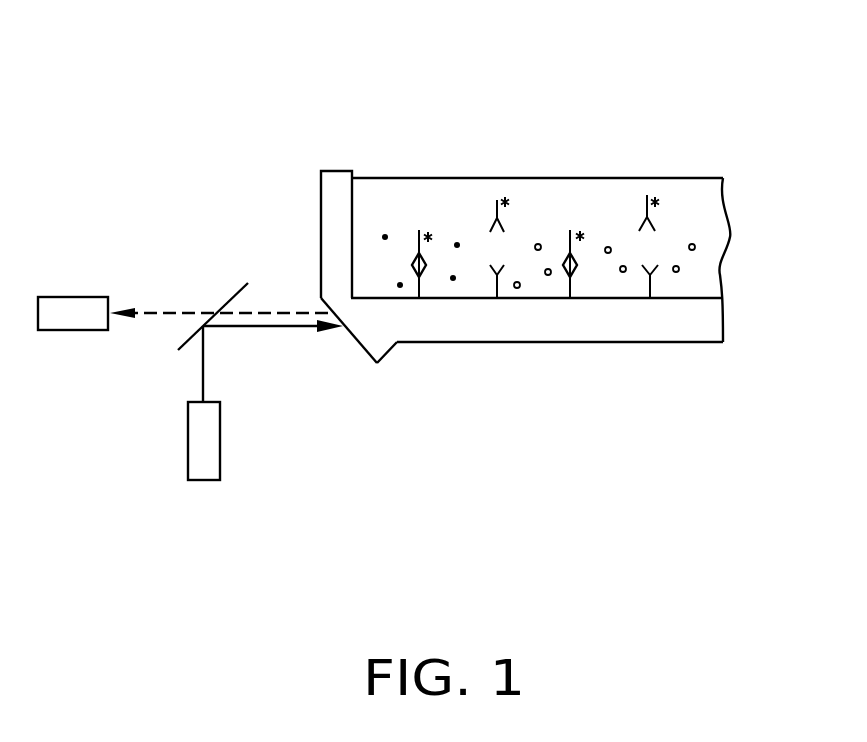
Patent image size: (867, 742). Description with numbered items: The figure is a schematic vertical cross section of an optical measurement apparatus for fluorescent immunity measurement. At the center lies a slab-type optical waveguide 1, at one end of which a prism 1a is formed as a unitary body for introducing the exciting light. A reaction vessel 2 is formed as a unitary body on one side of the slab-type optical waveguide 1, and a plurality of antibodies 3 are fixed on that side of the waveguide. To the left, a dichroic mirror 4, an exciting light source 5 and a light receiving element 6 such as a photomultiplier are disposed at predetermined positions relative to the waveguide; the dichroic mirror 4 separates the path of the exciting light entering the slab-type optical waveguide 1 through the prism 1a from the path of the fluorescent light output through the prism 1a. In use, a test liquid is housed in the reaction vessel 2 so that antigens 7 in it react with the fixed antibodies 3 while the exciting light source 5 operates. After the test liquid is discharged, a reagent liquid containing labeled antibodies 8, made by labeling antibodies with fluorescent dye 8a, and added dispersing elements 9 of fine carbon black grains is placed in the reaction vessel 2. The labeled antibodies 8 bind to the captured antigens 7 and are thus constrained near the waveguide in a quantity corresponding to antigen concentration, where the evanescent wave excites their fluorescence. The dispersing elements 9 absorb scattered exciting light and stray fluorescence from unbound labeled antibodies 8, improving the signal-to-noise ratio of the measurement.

The slab-type optical waveguide 1 is at (584, 344).
The prism 1a is at (367, 327).
The reaction vessel 2 is at (352, 223).
The antibodies 3 is at (572, 286).
The dichroic mirror 4 is at (232, 292).
The exciting light source 5 is at (203, 462).
The light receiving element 6 is at (70, 318).
The antigens 7 is at (414, 260).
The labeled antibodies 8 is at (495, 202).
The fluorescent dye 8a is at (647, 113).
The dispersing elements 9 is at (400, 290).